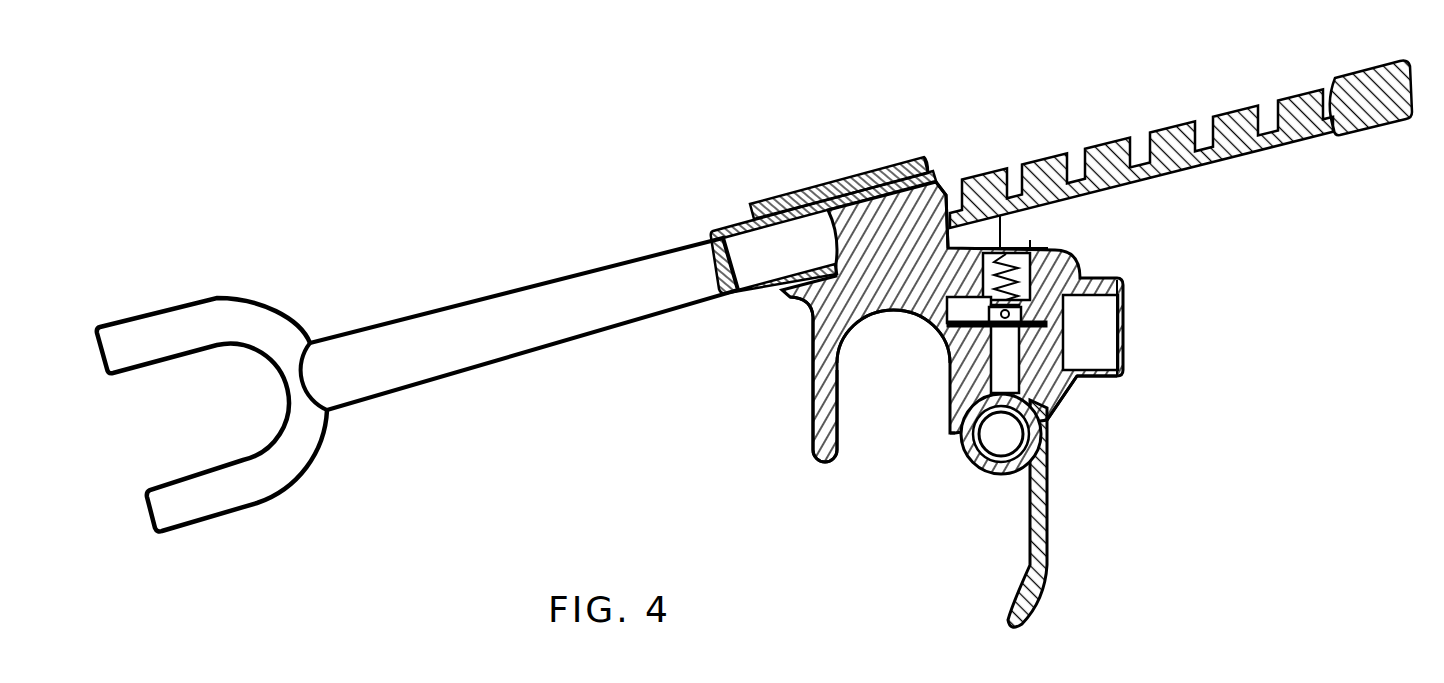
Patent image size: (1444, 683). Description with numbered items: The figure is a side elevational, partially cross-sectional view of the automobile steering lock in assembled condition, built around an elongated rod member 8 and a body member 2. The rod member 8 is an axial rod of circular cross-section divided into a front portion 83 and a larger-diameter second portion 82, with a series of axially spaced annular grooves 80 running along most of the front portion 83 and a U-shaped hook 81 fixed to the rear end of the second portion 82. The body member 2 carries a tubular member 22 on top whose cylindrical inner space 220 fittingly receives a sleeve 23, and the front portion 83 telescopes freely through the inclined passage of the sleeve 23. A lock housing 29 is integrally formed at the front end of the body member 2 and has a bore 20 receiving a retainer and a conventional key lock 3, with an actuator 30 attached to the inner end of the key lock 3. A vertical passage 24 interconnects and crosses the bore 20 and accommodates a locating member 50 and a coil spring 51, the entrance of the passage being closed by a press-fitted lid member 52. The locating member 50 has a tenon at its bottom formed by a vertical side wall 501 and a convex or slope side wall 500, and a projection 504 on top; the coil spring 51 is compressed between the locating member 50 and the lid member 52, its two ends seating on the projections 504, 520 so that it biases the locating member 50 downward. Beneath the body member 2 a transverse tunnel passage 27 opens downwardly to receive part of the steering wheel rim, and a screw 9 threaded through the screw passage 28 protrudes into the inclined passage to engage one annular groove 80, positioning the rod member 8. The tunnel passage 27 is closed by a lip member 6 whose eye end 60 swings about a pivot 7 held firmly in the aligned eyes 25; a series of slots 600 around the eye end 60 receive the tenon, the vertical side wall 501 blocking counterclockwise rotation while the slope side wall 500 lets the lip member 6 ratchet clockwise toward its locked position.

The body member 2 is at (992, 277).
The key lock 3 is at (1105, 331).
The lip member 6 is at (1046, 595).
The pivot 7 is at (1003, 448).
The elongated rod member 8 is at (417, 371).
The screw 9 is at (798, 312).
The bore 20 is at (1080, 307).
The tubular member 22 is at (835, 192).
The sleeve 23 is at (741, 222).
The vertical passage 24 is at (1064, 268).
The eyes 25 is at (1048, 423).
The transverse tunnel passage 27 is at (843, 388).
The screw passage 28 is at (889, 313).
The lock housing 29 is at (1122, 283).
The actuator 30 is at (1060, 344).
The locating member 50 is at (990, 372).
The coil spring 51 is at (1003, 248).
The lid member 52 is at (1040, 250).
The eye end 60 is at (988, 461).
The annular grooves 80 is at (997, 168).
The U-shaped hook 81 is at (216, 300).
The second portion 82 is at (401, 325).
The front portion 83 is at (1225, 112).
The cylindrical inner space 220 is at (920, 160).
The convex or slope side wall 500 is at (962, 400).
The vertical side wall 501 is at (1064, 428).
The projection 504 is at (950, 238).
The projection 520 is at (1032, 247).
The slots 600 is at (951, 428).